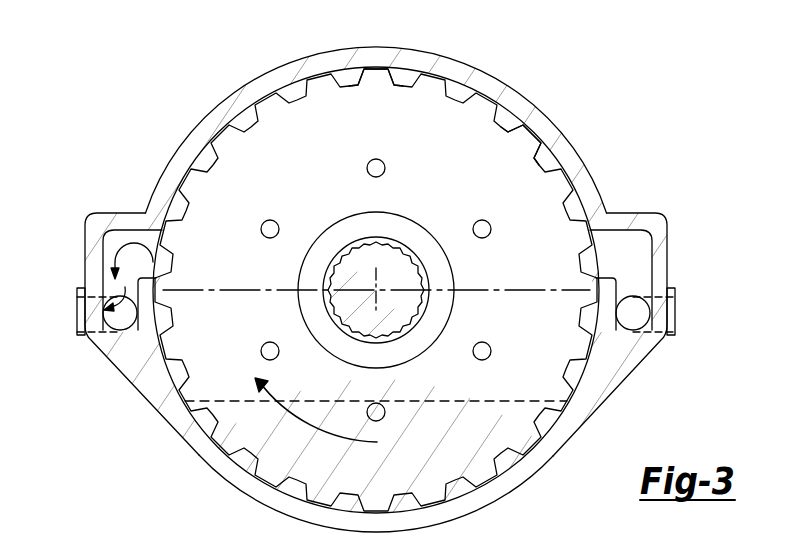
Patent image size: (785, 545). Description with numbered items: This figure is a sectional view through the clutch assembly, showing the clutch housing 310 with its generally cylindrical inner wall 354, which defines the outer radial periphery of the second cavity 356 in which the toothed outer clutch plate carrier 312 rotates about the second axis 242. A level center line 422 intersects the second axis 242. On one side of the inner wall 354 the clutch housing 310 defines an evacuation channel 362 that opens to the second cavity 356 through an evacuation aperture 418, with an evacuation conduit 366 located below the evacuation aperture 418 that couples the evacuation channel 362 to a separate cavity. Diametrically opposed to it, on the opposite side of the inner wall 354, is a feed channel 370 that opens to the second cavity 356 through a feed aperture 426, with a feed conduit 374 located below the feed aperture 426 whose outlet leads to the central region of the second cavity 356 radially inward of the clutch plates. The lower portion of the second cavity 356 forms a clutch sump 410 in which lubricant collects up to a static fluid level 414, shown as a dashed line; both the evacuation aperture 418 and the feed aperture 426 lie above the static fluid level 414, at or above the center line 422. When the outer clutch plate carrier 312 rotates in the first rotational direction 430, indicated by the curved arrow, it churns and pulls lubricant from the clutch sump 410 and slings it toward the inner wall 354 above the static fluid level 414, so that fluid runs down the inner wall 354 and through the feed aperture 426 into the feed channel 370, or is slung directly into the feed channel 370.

The clutch housing 310 is at (212, 112).
The outer clutch plate carrier 312 is at (317, 103).
The inner wall 354 is at (456, 83).
The second cavity 356 is at (547, 157).
The evacuation aperture 418 is at (600, 248).
The evacuation channel 362 is at (631, 272).
The evacuation conduit 366 is at (637, 316).
The feed channel 370 is at (114, 245).
The feed conduit 374 is at (120, 325).
The feed aperture 426 is at (141, 225).
The center line 422 is at (540, 290).
The second axis 242 is at (376, 290).
The static fluid level 414 is at (457, 401).
The first rotational direction 430 is at (320, 432).
The clutch sump 410 is at (463, 453).